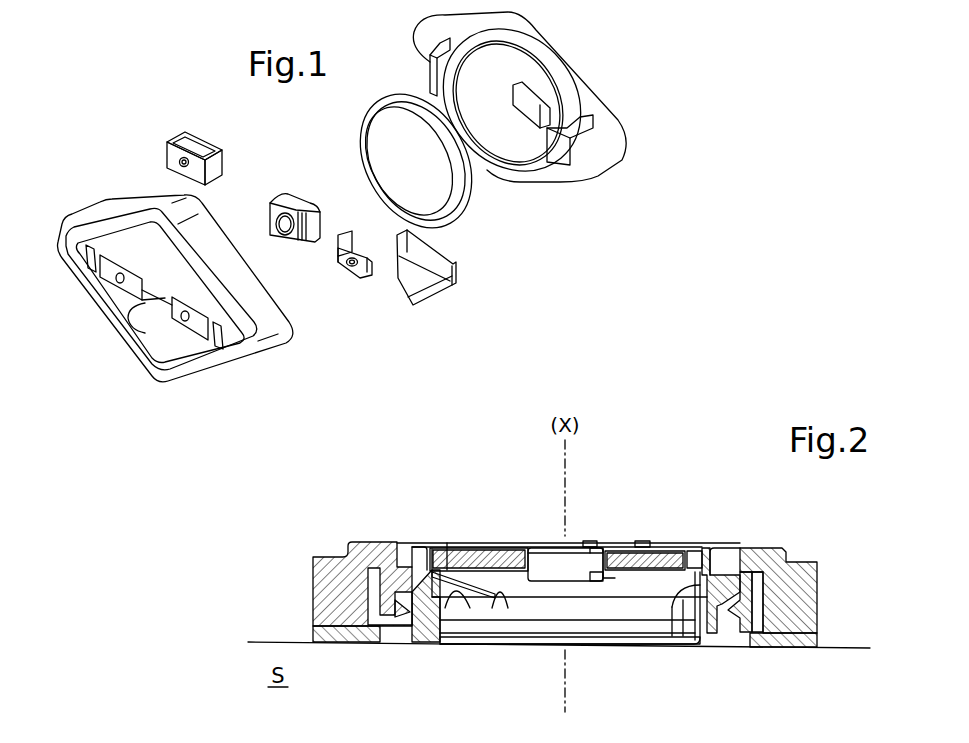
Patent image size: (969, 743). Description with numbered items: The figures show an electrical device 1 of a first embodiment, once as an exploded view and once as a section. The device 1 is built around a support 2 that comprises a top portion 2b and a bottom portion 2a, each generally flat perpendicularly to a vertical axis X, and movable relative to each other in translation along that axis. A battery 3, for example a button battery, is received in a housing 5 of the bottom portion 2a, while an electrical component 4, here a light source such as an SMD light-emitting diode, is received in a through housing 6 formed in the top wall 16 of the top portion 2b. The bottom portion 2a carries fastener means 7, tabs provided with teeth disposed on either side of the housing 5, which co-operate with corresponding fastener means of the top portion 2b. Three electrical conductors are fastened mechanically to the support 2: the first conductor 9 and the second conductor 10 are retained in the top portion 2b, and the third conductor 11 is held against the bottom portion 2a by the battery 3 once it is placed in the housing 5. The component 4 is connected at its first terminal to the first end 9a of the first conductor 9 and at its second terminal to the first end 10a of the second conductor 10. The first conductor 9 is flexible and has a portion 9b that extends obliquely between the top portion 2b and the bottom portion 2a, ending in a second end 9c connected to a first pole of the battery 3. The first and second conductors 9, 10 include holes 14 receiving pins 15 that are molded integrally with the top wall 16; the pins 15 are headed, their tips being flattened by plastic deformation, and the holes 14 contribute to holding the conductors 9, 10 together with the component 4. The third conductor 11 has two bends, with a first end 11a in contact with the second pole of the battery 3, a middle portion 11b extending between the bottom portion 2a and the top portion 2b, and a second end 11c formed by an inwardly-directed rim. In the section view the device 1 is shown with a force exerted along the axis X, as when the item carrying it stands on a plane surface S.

In FIG. 1, the electrical device 1 is at (657, 70).
In FIG. 2, the support 2 is at (300, 577).
In FIG. 1, the bottom portion 2a is at (640, 140).
In FIG. 2, the bottom portion 2a is at (790, 648).
In FIG. 1, the top portion 2b is at (186, 382).
In FIG. 2, the top portion 2b is at (810, 582).
In FIG. 1, the battery 3 is at (462, 205).
In FIG. 2, the battery 3 is at (578, 648).
In FIG. 1, the electrical component 4 is at (287, 200).
In FIG. 2, the electrical component 4 is at (575, 545).
In FIG. 1, the housing 5 is at (500, 65).
In FIG. 1, the through housing 6 is at (130, 339).
In FIG. 1, the fastener means 7 is at (430, 70).
In FIG. 2, the fastener means 7 is at (678, 612).
In FIG. 1, the first conductor 9 is at (207, 140).
In FIG. 2, the first conductor 9 is at (458, 543).
In FIG. 2, the first end of the first conductor 9a is at (545, 546).
In FIG. 2, the portion of the first conductor 9b is at (470, 598).
In FIG. 2, the second end of the first conductor 9c is at (504, 598).
In FIG. 1, the second conductor 10 is at (362, 282).
In FIG. 2, the second conductor 10 is at (665, 545).
In FIG. 2, the first end of the second conductor 10a is at (615, 545).
In FIG. 1, the third conductor 11 is at (457, 270).
In FIG. 2, the first end of the third conductor 11a is at (623, 648).
In FIG. 2, the middle portion of the third conductor 11b is at (736, 546).
In FIG. 2, the second end of the third conductor 11c is at (705, 545).
In FIG. 1, the holes 14 is at (168, 166).
In FIG. 2, the pins 15 is at (482, 543).
In FIG. 2, the top wall 16 is at (447, 543).